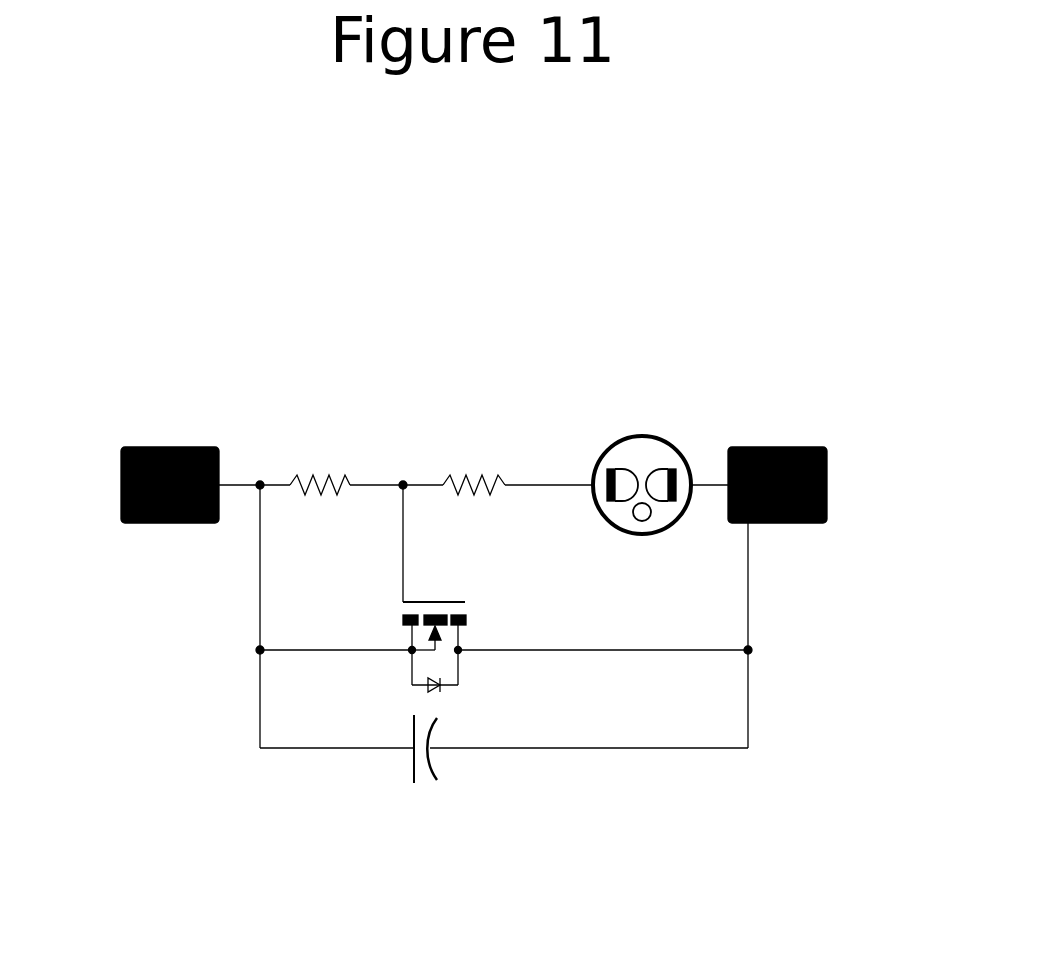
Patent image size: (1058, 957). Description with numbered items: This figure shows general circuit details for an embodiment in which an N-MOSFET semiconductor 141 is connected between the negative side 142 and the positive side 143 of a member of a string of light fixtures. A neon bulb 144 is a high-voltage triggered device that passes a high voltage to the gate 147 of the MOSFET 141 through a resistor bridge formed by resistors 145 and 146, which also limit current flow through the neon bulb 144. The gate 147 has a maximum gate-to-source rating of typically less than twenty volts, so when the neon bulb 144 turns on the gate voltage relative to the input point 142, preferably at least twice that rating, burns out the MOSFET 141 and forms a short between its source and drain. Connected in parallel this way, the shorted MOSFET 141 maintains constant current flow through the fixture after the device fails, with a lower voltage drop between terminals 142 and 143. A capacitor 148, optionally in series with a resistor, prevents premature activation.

The N-MOSFET semiconductor 141 is at (477, 692).
The negative side 142 is at (167, 430).
The positive side 143 is at (800, 530).
The neon bulb 144 is at (632, 435).
The resistor 145 is at (316, 435).
The resistor 146 is at (472, 455).
The gate 147 is at (452, 593).
The capacitor 148 is at (400, 790).